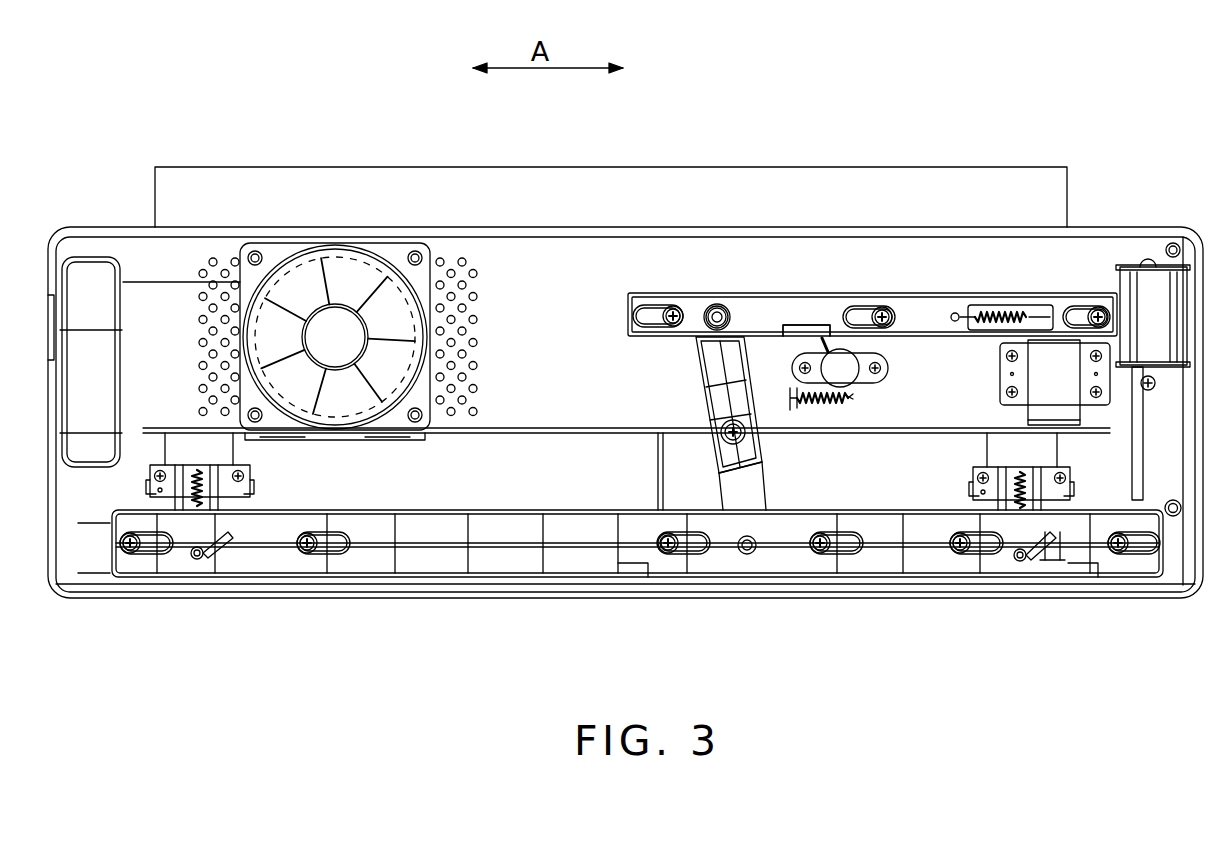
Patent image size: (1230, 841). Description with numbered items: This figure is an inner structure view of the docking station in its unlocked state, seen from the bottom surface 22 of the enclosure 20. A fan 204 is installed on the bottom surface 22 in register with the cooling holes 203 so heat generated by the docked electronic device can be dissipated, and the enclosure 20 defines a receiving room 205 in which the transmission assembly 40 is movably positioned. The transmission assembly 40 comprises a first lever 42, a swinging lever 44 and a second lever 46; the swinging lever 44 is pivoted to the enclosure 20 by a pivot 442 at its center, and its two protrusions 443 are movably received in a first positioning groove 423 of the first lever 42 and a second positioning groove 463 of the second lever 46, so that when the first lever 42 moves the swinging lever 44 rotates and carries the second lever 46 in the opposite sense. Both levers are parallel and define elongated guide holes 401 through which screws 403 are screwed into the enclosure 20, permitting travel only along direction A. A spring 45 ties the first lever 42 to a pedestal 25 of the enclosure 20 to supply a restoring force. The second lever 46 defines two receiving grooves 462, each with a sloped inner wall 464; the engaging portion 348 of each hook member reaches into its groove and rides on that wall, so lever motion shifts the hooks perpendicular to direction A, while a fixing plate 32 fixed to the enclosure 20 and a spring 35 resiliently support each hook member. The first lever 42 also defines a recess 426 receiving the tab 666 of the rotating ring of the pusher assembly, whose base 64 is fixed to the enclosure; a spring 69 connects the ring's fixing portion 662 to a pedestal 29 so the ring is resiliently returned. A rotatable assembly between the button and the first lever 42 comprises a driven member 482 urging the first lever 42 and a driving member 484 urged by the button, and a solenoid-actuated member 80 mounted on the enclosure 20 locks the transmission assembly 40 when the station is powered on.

The enclosure 20 is at (80, 228).
The bottom surface 22 is at (163, 302).
The cooling holes 203 is at (212, 265).
The fan 204 is at (305, 290).
The receiving room 205 is at (523, 357).
The transmission assembly 40 is at (833, 113).
The first lever 42 is at (790, 330).
The swinging lever 44 is at (708, 350).
The second lever 46 is at (930, 525).
The guide holes 401 is at (645, 316).
The screws 403 is at (668, 318).
The first positioning groove 423 is at (717, 305).
The protrusions 443 is at (727, 313).
The recess 426 is at (830, 335).
The spring 45 is at (1027, 312).
The pivot 442 is at (733, 432).
The pedestal 29 is at (760, 463).
The second positioning groove 463 is at (747, 548).
The engaging portion 348 is at (205, 563).
The fixing plate 32 is at (178, 498).
The spring 35 is at (198, 507).
The spring 69 is at (840, 370).
The fixing portion 662 is at (848, 397).
The base 64 is at (832, 392).
The tab 666 is at (823, 395).
The pedestal 25 is at (1043, 320).
The solenoid-actuated member 80 is at (1053, 393).
The driven member 482 is at (1127, 305).
The driving member 484 is at (1172, 345).
The sloped inner wall 464 is at (1030, 557).
The receiving grooves 462 is at (1052, 553).